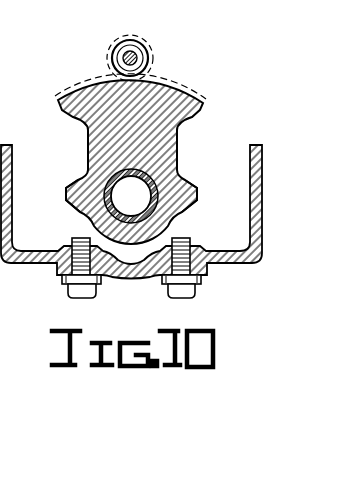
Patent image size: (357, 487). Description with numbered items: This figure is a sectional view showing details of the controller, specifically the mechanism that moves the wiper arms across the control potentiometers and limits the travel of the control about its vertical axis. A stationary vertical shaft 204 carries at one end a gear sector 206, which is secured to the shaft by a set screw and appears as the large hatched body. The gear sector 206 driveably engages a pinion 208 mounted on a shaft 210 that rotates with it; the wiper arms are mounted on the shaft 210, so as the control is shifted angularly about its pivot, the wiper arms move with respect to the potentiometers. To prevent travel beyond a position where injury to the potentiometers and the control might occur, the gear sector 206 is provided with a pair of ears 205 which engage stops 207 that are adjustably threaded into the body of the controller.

The stationary vertical shaft 204 is at (156, 186).
The ears 205 is at (62, 197).
The gear sector 206 is at (173, 110).
The stops 207 is at (80, 237).
The pinion 208 is at (150, 66).
The shaft 210 is at (133, 57).